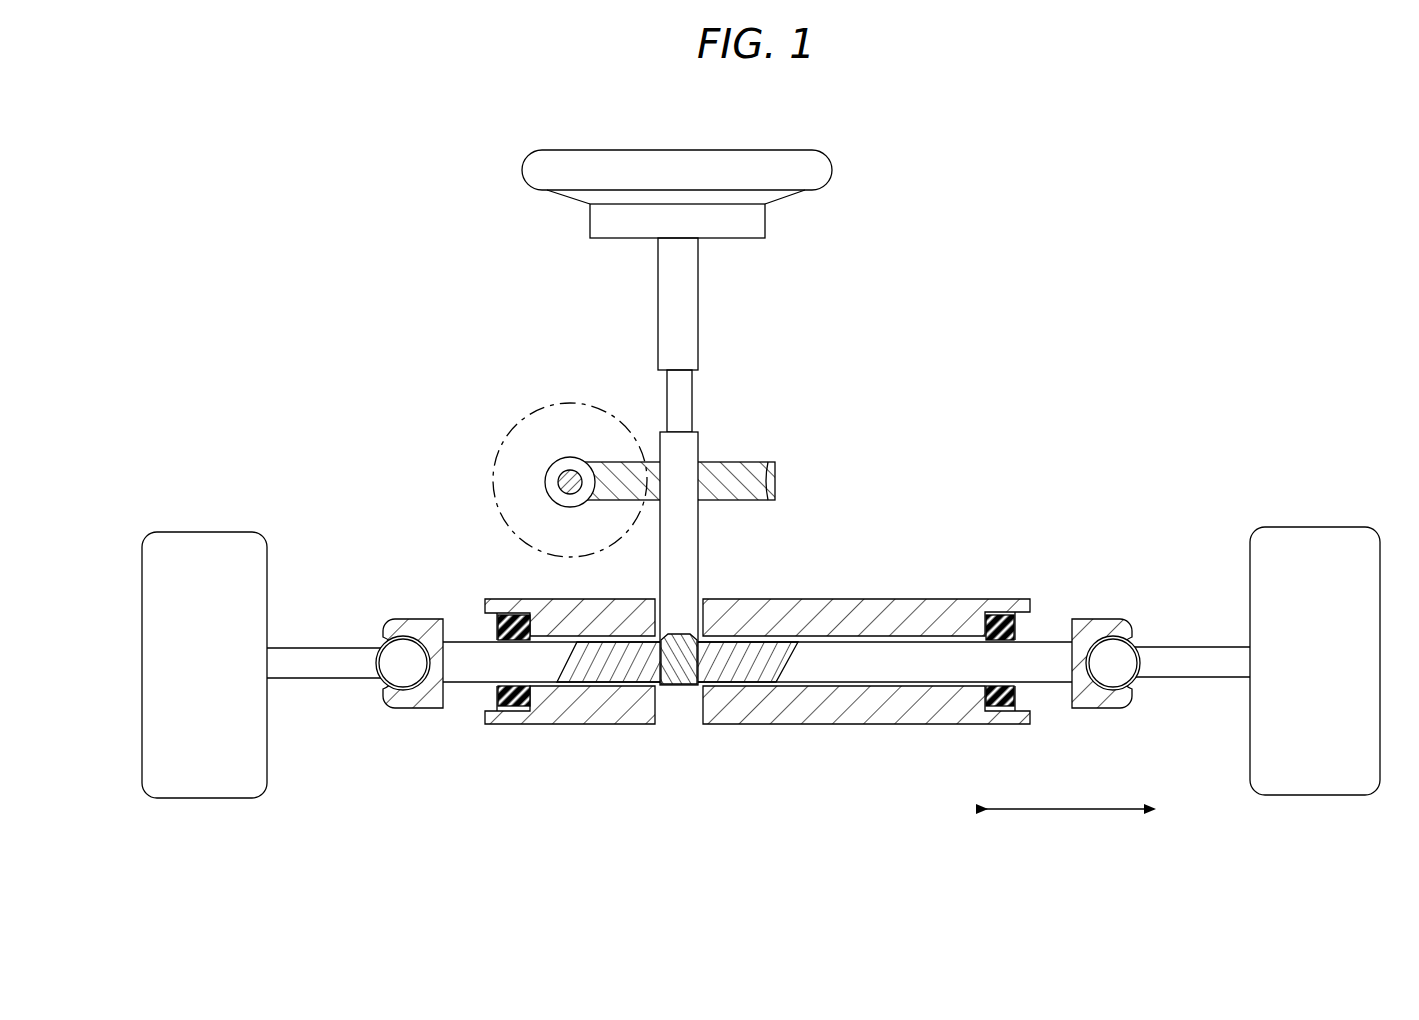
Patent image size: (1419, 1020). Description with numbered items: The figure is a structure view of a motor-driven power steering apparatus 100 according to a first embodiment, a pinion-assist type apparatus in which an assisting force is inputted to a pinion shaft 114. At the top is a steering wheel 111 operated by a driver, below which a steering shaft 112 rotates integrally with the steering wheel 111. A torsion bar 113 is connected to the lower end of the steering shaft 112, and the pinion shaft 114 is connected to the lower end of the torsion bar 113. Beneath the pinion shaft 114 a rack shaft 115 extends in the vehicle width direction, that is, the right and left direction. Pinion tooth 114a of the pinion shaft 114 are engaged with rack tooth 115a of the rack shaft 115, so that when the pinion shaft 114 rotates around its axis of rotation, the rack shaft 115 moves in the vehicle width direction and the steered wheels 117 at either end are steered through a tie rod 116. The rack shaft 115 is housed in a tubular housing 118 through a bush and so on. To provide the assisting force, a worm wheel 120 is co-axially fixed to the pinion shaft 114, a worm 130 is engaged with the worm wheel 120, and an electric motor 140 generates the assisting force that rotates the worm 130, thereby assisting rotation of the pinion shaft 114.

The motor-driven power steering apparatus 100 is at (440, 236).
The steering wheel 111 is at (832, 163).
The steering shaft 112 is at (698, 299).
The torsion bar 113 is at (692, 399).
The pinion shaft 114 is at (717, 605).
The pinion tooth 114a is at (678, 667).
The rack shaft 115 is at (757, 713).
The rack tooth 115a is at (623, 670).
The tie rod 116 is at (313, 648).
The steered wheels 117 is at (203, 532).
The tubular housing 118 is at (884, 597).
The worm wheel 120 is at (775, 479).
The worm 130 is at (546, 476).
The electric motor 140 is at (493, 492).